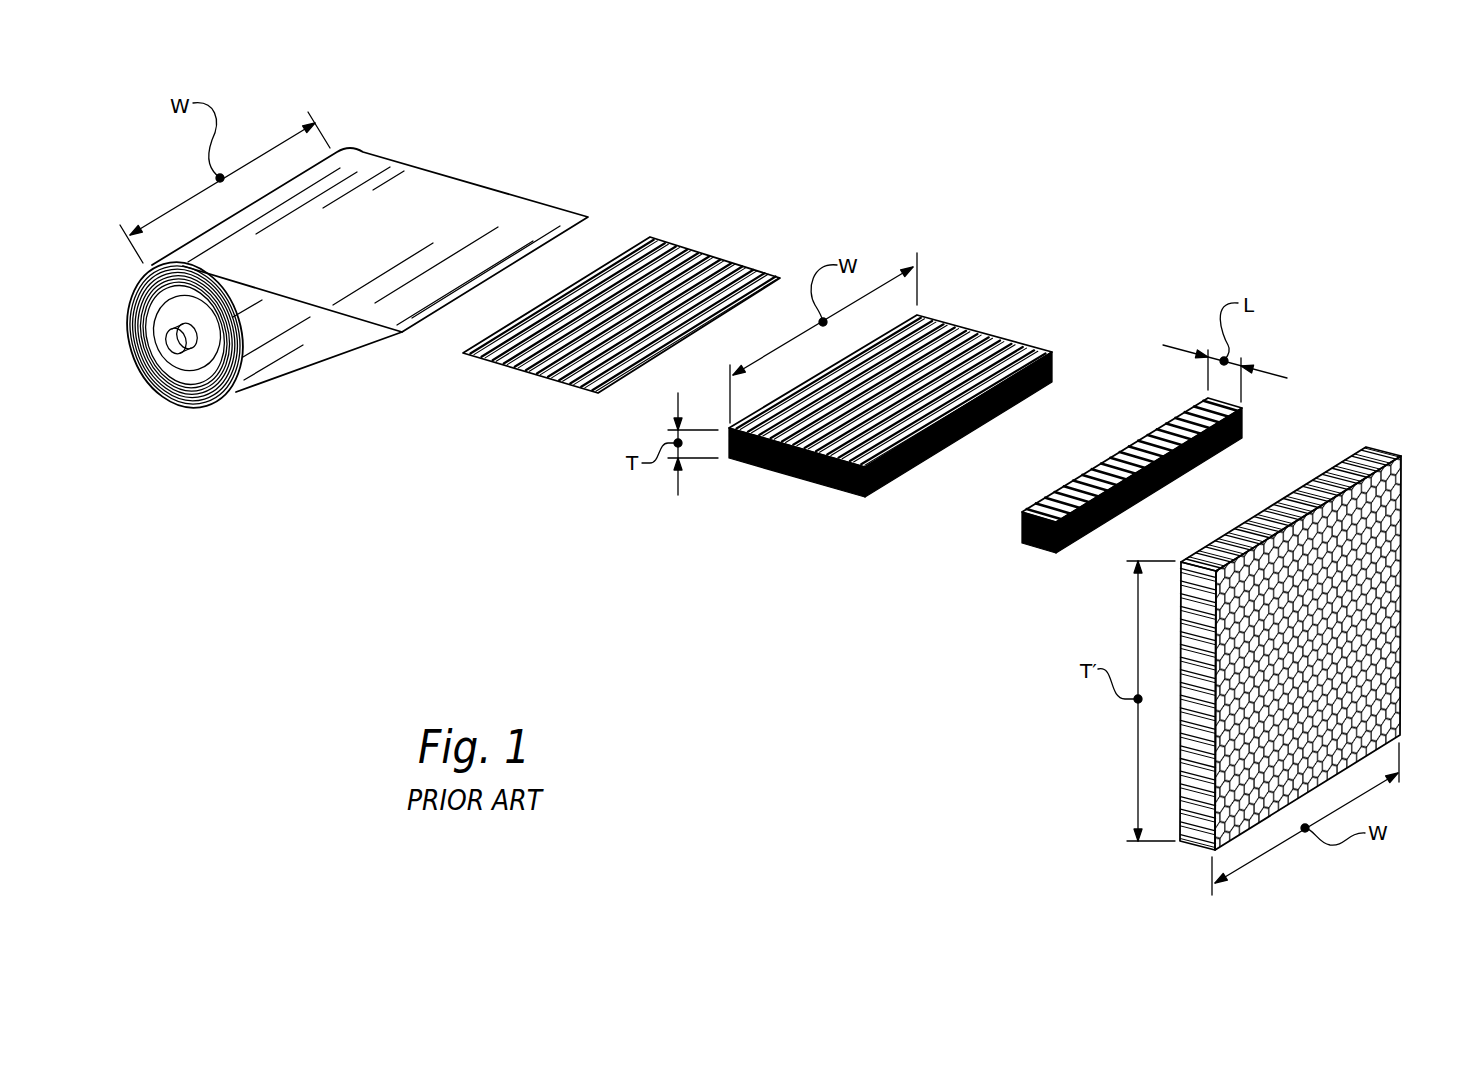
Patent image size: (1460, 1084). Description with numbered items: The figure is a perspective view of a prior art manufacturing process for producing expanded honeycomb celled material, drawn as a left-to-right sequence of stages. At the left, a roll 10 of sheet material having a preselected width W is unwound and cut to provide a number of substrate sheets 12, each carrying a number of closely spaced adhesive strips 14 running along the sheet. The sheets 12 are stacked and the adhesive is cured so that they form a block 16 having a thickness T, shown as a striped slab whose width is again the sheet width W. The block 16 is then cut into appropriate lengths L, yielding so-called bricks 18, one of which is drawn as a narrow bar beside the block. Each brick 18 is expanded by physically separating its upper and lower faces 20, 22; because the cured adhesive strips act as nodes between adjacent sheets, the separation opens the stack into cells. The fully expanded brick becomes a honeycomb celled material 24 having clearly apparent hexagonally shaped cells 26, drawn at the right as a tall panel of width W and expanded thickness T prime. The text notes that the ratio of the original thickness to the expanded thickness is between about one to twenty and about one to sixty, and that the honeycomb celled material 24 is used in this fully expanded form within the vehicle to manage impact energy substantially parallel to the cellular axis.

The roll 10 is at (282, 402).
The substrate sheets 12 is at (555, 387).
The adhesive strips 14 is at (628, 295).
The block 16 is at (805, 485).
The bricks 18 is at (1028, 552).
The upper face 20 is at (1122, 455).
The lower face 22 is at (1207, 458).
The honeycomb celled material 24 is at (1377, 437).
The hexagonally shaped cells 26 is at (1300, 623).